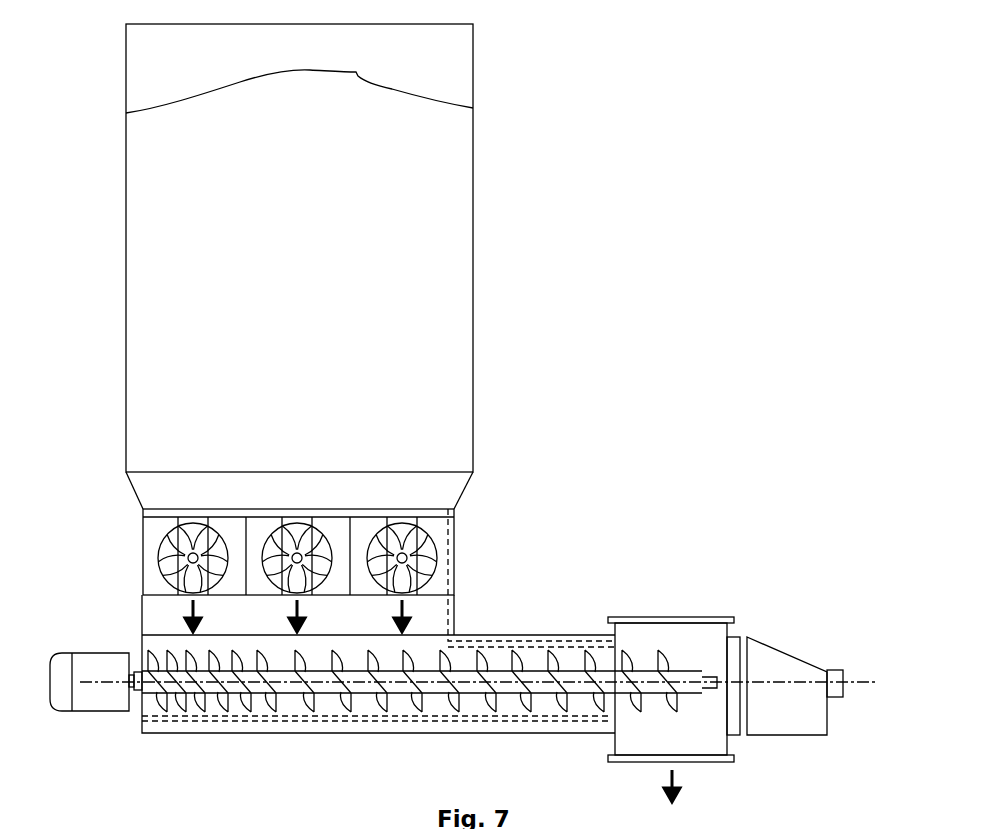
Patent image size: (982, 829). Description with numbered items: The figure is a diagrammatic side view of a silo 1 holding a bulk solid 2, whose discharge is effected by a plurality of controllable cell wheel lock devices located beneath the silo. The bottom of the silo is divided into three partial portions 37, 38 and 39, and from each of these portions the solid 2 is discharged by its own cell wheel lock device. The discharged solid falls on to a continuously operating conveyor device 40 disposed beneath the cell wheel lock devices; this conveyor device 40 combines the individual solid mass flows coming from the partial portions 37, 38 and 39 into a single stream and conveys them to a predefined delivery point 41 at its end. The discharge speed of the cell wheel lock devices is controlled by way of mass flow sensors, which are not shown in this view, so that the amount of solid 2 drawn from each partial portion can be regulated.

The silo 1 is at (473, 60).
The solid 2 is at (213, 99).
The partial portion 37 is at (440, 546).
The partial portion 38 is at (330, 528).
The partial portion 39 is at (157, 543).
The conveyor device 40 is at (357, 690).
The delivery point 41 is at (655, 617).